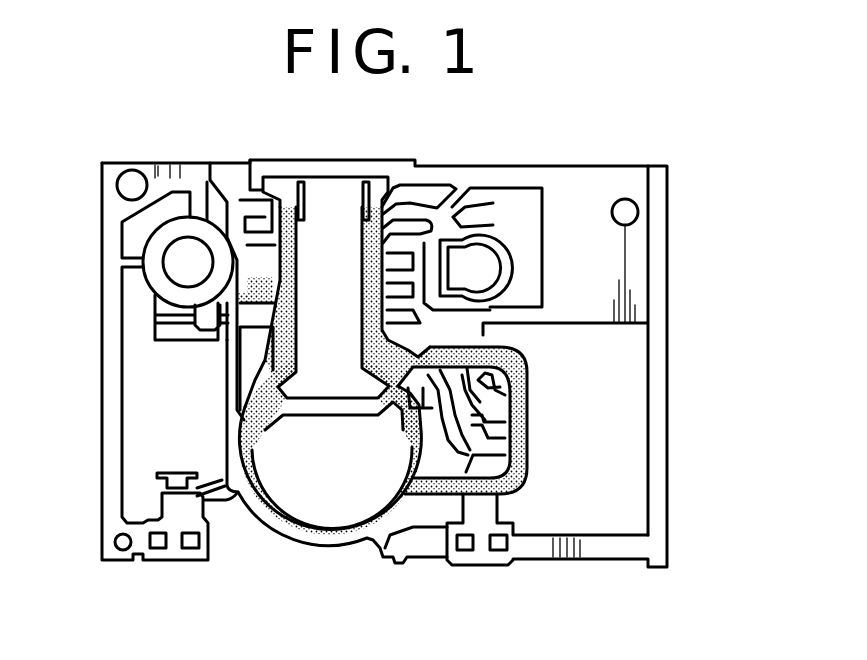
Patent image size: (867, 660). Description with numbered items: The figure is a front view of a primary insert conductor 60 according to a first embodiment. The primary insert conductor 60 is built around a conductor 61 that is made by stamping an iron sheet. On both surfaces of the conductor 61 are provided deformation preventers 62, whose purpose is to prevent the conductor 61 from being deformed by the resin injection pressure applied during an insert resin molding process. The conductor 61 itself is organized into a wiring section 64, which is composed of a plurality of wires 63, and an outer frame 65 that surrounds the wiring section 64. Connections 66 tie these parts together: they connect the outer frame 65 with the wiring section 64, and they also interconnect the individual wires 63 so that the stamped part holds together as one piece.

The primary insert conductor 60 is at (673, 265).
The conductor 61 is at (597, 192).
The deformation preventer 62 is at (518, 355).
The wire 63 is at (463, 430).
The wiring section 64 is at (512, 258).
The outer frame 65 is at (660, 470).
The connection 66 is at (147, 267).